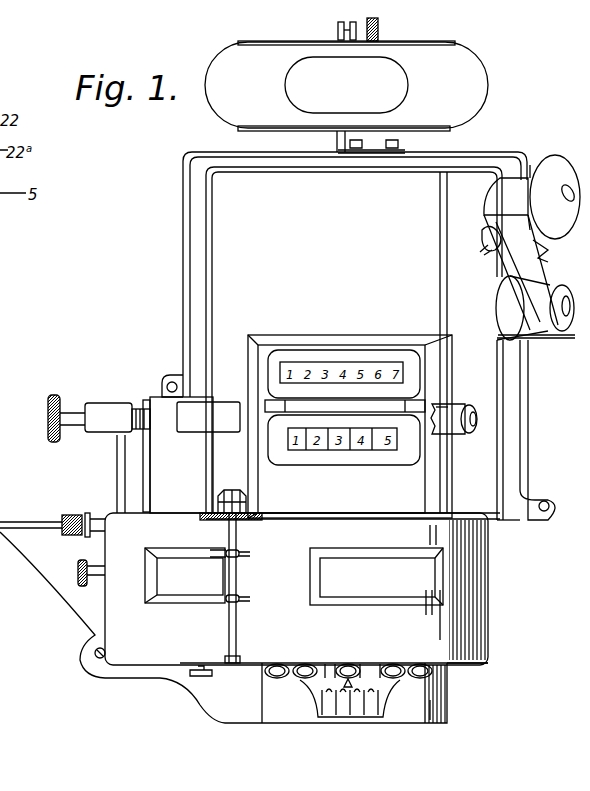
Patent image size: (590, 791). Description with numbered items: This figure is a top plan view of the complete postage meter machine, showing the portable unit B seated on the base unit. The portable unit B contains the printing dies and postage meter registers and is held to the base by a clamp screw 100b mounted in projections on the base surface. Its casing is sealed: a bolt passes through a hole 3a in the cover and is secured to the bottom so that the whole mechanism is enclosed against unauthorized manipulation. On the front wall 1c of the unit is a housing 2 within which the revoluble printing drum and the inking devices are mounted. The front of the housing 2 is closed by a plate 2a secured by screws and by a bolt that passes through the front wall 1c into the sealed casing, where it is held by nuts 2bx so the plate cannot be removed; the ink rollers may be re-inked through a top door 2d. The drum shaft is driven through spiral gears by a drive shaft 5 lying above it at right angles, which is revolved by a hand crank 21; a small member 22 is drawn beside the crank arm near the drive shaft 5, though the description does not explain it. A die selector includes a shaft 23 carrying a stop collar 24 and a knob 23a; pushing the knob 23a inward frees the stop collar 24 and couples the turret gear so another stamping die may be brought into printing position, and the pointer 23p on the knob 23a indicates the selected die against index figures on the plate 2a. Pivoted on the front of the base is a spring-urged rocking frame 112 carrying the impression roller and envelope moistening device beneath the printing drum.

The portable unit B is at (358, 336).
The housing 2 is at (489, 626).
The plate 2a is at (460, 667).
The nuts 2bx is at (248, 497).
The top door 2d is at (182, 560).
The hole 3a is at (160, 483).
The drive shaft 5 is at (547, 337).
The hand crank 21 is at (537, 257).
The pawl 22 is at (486, 233).
The shaft 23 is at (234, 668).
The knob 23a is at (383, 692).
The pointer 23p is at (316, 686).
The stop collar 24 is at (306, 665).
The clamp screw 100b is at (60, 404).
The rocking frame 112 is at (436, 708).
The front wall 1c is at (505, 520).